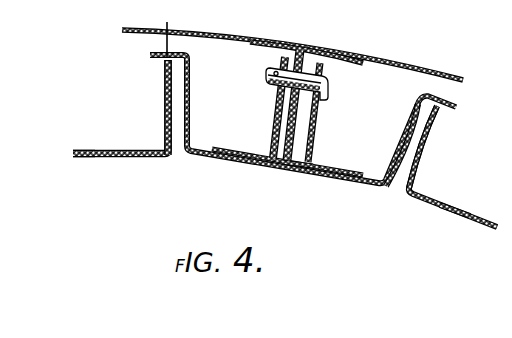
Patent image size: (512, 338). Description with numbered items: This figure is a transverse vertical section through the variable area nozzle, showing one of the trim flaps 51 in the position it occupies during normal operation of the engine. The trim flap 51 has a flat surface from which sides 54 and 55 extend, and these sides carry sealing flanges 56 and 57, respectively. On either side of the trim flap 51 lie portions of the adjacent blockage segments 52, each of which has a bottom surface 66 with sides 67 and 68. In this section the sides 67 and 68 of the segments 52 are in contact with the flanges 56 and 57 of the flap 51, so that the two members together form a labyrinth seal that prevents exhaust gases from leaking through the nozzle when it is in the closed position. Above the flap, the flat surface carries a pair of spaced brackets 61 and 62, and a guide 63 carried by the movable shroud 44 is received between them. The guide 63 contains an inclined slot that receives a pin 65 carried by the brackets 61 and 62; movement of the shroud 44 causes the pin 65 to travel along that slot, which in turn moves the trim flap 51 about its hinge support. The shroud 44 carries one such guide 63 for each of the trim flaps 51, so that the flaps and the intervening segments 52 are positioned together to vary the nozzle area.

The movable shroud 44 is at (386, 56).
The trim flap 51 is at (262, 177).
The blockage segment 52 is at (127, 159).
The side 54 is at (190, 105).
The side 55 is at (404, 132).
The sealing flange 56 is at (170, 31).
The sealing flange 57 is at (449, 103).
The bracket 61 is at (276, 124).
The bracket 62 is at (317, 118).
The guide 63 is at (297, 153).
The pin 65 is at (328, 88).
The bottom surface 66 is at (85, 149).
The side 67 is at (163, 104).
The side 68 is at (429, 136).